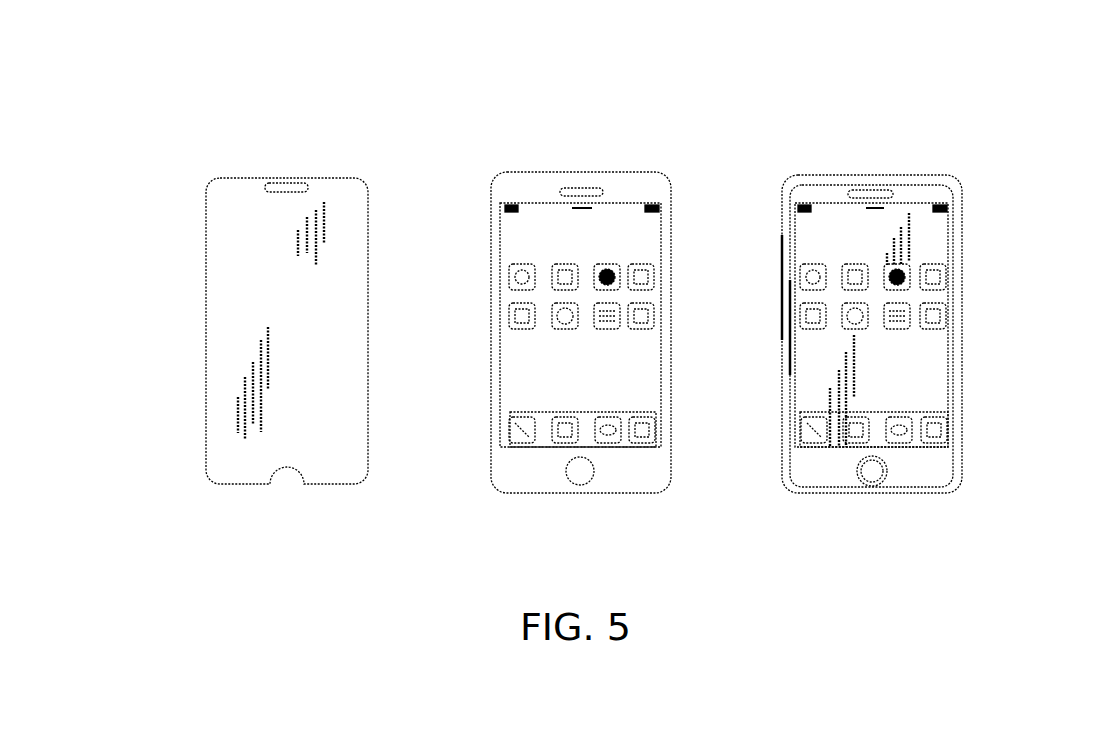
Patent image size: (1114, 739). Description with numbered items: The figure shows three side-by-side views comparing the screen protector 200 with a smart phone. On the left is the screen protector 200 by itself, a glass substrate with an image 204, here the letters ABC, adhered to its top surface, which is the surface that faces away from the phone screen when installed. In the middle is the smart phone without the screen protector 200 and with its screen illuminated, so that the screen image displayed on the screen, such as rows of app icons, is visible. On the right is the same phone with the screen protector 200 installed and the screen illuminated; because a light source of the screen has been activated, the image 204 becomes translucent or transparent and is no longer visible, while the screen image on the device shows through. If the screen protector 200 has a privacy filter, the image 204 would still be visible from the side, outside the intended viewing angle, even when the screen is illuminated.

The screen protector 200 is at (230, 242).
The image 204 is at (232, 293).